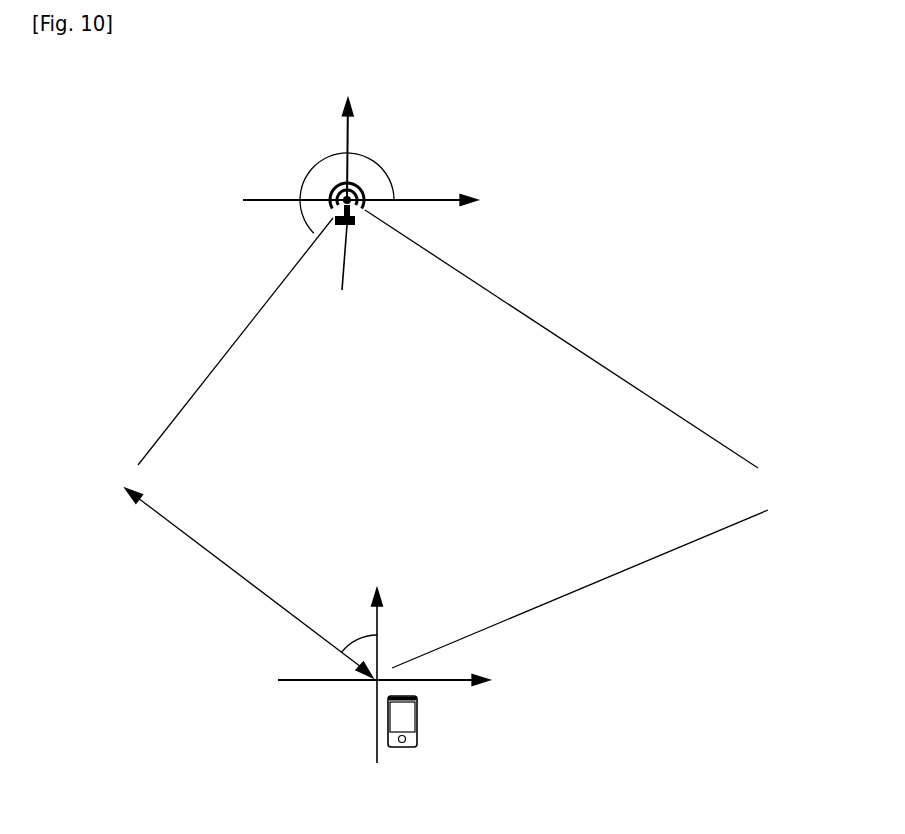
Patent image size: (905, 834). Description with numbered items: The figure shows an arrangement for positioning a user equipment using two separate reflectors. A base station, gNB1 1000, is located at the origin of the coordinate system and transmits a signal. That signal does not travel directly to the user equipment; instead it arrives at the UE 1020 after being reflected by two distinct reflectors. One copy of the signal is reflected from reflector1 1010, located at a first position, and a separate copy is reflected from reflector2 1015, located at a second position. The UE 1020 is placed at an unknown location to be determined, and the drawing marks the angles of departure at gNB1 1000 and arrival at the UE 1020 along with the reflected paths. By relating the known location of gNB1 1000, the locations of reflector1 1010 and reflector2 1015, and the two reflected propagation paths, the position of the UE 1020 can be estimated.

The gNB1 1000 is at (418, 130).
The reflector1 1010 is at (80, 510).
The reflector2 1015 is at (805, 515).
The UE 1020 is at (449, 746).